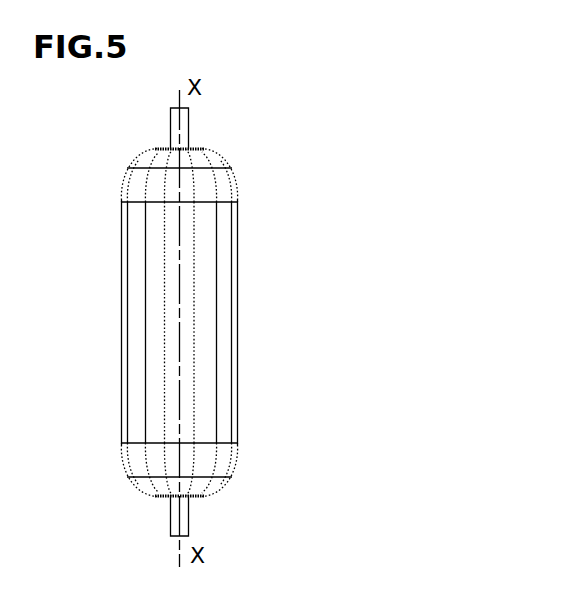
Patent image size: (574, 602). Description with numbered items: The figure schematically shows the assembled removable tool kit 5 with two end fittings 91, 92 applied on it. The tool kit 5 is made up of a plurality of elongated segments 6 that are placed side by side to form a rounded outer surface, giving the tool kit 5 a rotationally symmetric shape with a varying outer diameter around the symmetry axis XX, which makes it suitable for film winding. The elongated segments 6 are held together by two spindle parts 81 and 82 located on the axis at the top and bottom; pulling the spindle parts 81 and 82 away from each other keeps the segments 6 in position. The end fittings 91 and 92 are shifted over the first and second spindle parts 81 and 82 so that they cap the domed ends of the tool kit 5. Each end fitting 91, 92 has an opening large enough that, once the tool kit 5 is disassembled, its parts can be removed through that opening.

The removable tool kit 5 is at (245, 172).
The elongated segments 6 is at (222, 278).
The first spindle part 81 is at (170, 124).
The second spindle part 82 is at (168, 520).
The first end fitting 91 is at (157, 159).
The second end fitting 92 is at (140, 490).